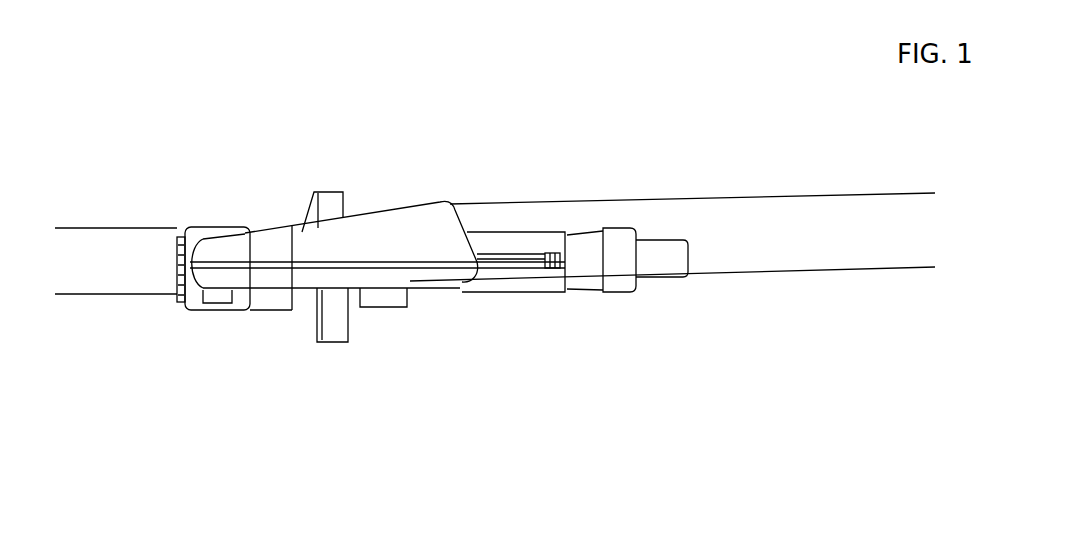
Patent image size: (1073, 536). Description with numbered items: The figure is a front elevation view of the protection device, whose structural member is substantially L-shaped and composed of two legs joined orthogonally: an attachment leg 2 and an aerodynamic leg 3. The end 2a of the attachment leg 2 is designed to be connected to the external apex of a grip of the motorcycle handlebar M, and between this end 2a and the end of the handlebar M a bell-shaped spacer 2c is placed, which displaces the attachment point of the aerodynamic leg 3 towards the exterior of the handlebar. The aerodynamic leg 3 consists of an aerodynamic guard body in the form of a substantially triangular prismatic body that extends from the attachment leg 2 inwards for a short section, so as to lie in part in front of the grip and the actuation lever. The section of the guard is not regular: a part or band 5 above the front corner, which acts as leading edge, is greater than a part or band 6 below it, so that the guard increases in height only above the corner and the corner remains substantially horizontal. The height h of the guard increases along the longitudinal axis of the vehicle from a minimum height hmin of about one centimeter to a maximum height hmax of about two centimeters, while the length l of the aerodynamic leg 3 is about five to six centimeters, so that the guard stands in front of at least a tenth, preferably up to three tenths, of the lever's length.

The attachment leg 2 is at (663, 532).
The end of attachment leg 2a is at (200, 226).
The spacer 2c is at (335, 192).
The aerodynamic leg 3 is at (427, 283).
The part or band above the front corner 5 is at (425, 213).
The part or band below the front corner 6 is at (405, 273).
The motorcycle handlebar M is at (532, 200).
The height of the guard h is at (383, 187).
The minimum height hmin is at (115, 238).
The maximum height hmax is at (933, 193).
The length of the aerodynamic leg l is at (566, 292).